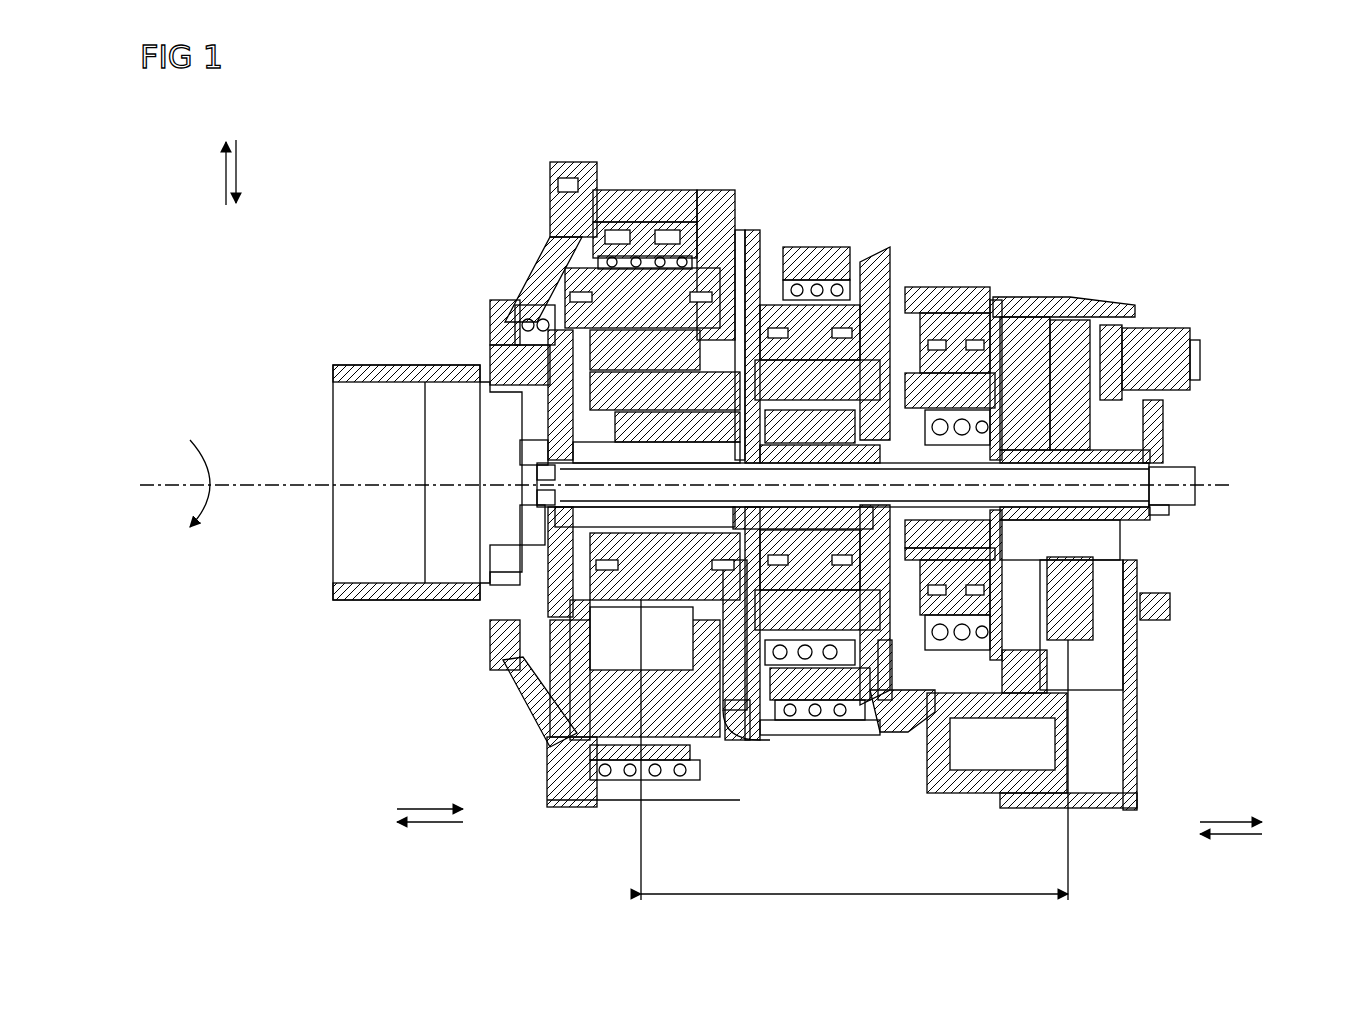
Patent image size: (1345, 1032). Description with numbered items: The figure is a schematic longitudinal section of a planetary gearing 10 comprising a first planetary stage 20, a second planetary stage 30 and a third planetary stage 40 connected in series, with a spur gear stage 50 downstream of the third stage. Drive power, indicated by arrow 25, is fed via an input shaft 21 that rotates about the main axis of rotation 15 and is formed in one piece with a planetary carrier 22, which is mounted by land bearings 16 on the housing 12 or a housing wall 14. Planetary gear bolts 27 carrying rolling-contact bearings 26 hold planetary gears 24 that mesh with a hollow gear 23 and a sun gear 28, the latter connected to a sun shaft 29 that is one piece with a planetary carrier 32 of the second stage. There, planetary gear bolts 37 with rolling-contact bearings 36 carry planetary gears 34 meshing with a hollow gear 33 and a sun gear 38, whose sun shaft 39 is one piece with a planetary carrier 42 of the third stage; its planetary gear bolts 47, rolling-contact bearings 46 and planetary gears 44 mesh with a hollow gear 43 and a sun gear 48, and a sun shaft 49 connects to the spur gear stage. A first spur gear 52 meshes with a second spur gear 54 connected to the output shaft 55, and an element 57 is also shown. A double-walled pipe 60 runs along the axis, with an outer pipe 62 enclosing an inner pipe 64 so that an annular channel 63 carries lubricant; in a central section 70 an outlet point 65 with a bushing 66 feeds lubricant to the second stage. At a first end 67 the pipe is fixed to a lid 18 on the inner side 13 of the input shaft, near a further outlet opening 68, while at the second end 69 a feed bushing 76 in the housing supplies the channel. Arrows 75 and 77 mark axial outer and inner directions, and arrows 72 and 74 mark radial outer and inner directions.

The planetary gearing 10 is at (1180, 230).
The housing 12 is at (1070, 300).
The inner side 13 is at (512, 553).
The housing wall 14 is at (728, 192).
The main axis of rotation 15 is at (148, 481).
The land bearings 16 is at (525, 300).
The lid 18 is at (540, 522).
The first planetary stage 20 is at (384, 365).
The input shaft 21 is at (400, 601).
The planetary carrier 22 is at (548, 710).
The hollow gear 23 is at (680, 216).
The planetary gears 24 is at (640, 240).
The arrow 25 is at (206, 441).
The rolling-contact bearing 26 is at (553, 212).
The planetary gear bolts 27 is at (616, 262).
The sun gear 28 is at (490, 358).
The sun shaft 29 is at (630, 600).
The second planetary stage 30 is at (893, 290).
The planetary carrier 32 is at (767, 237).
The hollow gear 33 is at (818, 735).
The planetary gear 34 is at (800, 705).
The rolling-contact bearing 36 is at (833, 245).
The planetary gear bolts 37 is at (745, 736).
The sun gear 38 is at (883, 690).
The sun shaft 39 is at (912, 700).
The third planetary stage 40 is at (993, 280).
The planetary carrier 42 is at (967, 312).
The hollow gear 43 is at (940, 287).
The planetary gears 44 is at (953, 317).
The rolling-contact bearing 46 is at (1030, 585).
The planetary gear bolts 47 is at (1000, 590).
The sun gear 48 is at (1010, 330).
The sun shaft 49 is at (1147, 567).
The spur gear stage 50 is at (1133, 315).
The first spur gear 52 is at (1100, 613).
The second spur gear 54 is at (1107, 313).
The output shaft 55 is at (1202, 357).
The output member 57 is at (1135, 362).
The double-walled pipe 60 is at (1060, 540).
The outer pipe 62 is at (1150, 462).
The annular channel 63 is at (543, 467).
The inner pipe 64 is at (1196, 468).
The outlet point 65 is at (797, 250).
The bushing 66 is at (816, 290).
The first end 67 is at (543, 453).
The further outlet opening 68 is at (547, 497).
The second end 69 is at (1178, 510).
The central section 70 is at (880, 894).
The arrow 72 is at (226, 172).
The arrow 74 is at (237, 172).
The arrows 75 is at (432, 822).
The feed bushing 76 is at (1165, 440).
The arrows 77 is at (425, 809).